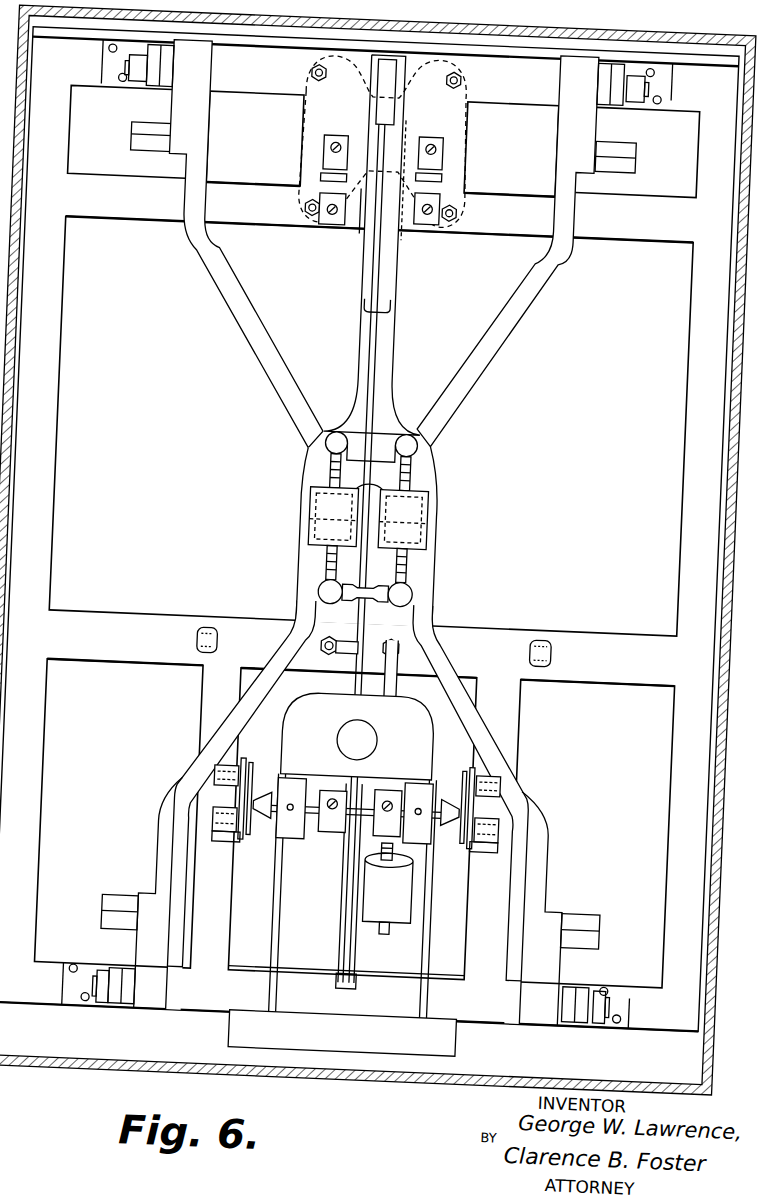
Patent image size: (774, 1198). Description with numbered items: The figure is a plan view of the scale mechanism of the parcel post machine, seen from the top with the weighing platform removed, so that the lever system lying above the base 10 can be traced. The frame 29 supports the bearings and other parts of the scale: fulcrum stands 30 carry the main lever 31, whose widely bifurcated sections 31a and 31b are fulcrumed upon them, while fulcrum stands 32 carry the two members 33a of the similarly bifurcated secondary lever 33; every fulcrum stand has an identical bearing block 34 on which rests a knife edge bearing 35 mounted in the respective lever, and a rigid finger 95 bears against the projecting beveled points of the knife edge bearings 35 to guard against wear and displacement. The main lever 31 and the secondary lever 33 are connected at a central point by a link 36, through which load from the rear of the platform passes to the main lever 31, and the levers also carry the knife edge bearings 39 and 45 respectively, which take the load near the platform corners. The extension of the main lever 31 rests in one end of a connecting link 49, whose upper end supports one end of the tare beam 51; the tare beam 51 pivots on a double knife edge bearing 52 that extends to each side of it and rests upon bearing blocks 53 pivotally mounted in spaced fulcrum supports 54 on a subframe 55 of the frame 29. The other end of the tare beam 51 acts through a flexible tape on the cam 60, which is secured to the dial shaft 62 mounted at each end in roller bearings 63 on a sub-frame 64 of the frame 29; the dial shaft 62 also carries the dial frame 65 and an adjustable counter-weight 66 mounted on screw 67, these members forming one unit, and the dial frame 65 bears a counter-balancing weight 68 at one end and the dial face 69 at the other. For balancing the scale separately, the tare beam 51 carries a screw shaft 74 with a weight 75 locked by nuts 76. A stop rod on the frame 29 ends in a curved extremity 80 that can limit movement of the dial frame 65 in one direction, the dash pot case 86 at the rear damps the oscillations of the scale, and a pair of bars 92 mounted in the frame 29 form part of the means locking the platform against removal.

The base 10 is at (107, 1069).
The frame 29 is at (688, 540).
The fulcrum stands 30 is at (94, 1018).
The main lever 31 is at (413, 582).
The bifurcated section 31a is at (559, 875).
The bifurcated section 31b is at (172, 871).
The fulcrum stands 32 is at (85, 85).
The secondary lever 33 is at (423, 431).
The members 33a is at (542, 250).
The bearing blocks 34 is at (112, 96).
The knife edge bearings 35 is at (122, 94).
The link 36 is at (355, 561).
The knife edge bearings 39 is at (115, 927).
The knife edge bearings 45 is at (121, 163).
The connecting link 49 is at (368, 62).
The tare beam 51 is at (366, 348).
The double knife edge bearing 52 is at (344, 212).
The bearing blocks 53 is at (303, 200).
The fulcrum supports 54 is at (305, 163).
The subframe 55 is at (487, 218).
The cam 60 is at (356, 937).
The dial shaft 62 is at (442, 798).
The roller bearings 63 is at (253, 849).
The sub-frame 64 is at (206, 735).
The dial frame 65 is at (291, 949).
The counter-weight 66 is at (410, 919).
The screw 67 is at (399, 933).
The counter-balancing weight 68 is at (300, 746).
The dial face 69 is at (248, 1036).
The screw shaft 74 is at (322, 473).
The weight 75 is at (315, 511).
The nuts 76 is at (316, 551).
The curved extremity 80 is at (400, 667).
The dash pot case 86 is at (387, 200).
The bars 92 is at (204, 636).
The rigid finger 95 is at (111, 74).